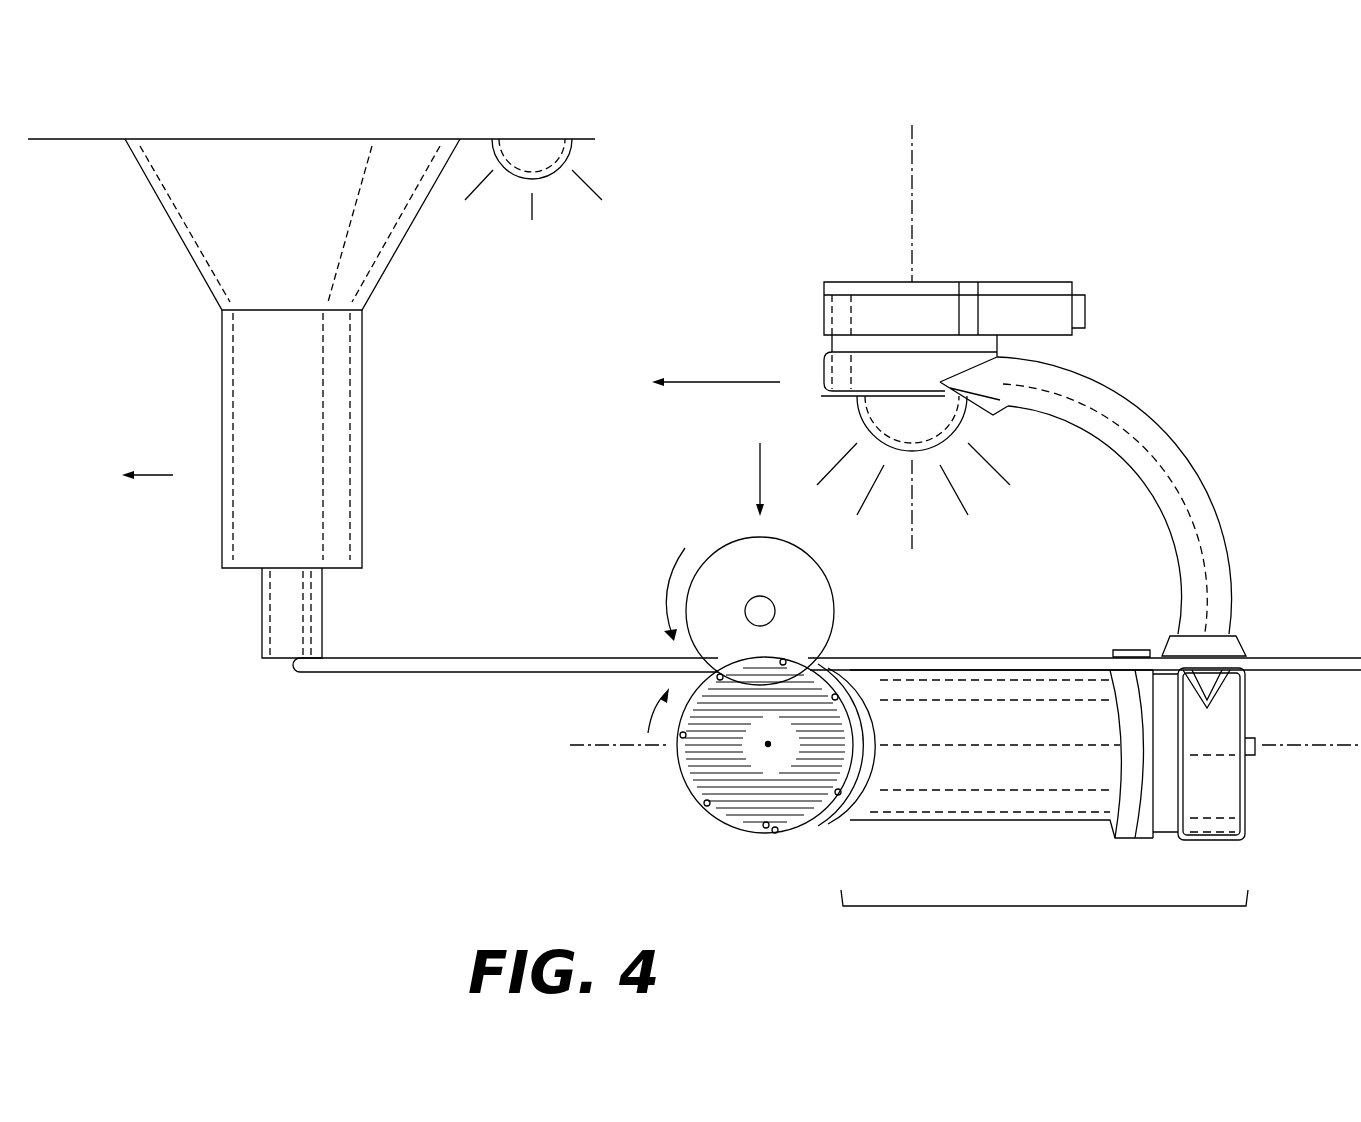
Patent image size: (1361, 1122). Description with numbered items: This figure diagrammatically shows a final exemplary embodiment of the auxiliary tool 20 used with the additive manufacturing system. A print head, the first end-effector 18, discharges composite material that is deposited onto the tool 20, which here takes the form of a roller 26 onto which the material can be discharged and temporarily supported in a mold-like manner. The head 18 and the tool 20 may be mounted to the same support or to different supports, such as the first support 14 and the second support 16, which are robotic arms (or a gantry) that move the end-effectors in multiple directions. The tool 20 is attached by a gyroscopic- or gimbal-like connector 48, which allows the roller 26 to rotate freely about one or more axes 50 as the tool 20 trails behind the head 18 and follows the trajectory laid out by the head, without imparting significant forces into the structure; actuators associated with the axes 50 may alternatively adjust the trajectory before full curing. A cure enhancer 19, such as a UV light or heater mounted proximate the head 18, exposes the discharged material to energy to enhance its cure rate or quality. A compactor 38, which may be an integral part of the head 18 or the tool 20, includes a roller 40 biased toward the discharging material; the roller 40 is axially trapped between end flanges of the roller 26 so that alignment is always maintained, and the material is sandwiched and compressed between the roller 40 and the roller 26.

The first support 14 is at (317, 108).
The second support 16 is at (1018, 255).
The first end-effector 18 is at (191, 776).
The cure enhancer 19 is at (546, 170).
The second end-effector 20 is at (769, 898).
The roller 26 is at (813, 824).
The compactor 38 is at (853, 606).
The roller 40 is at (772, 580).
The connector 48 is at (930, 906).
The axes 50 is at (912, 533).